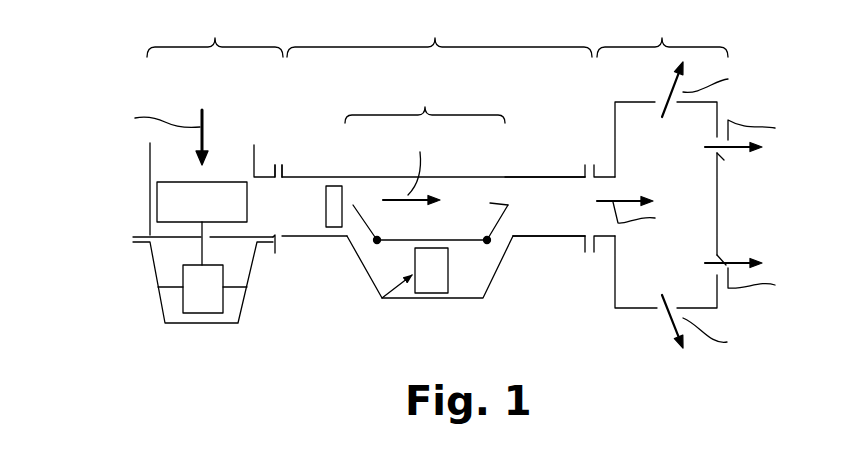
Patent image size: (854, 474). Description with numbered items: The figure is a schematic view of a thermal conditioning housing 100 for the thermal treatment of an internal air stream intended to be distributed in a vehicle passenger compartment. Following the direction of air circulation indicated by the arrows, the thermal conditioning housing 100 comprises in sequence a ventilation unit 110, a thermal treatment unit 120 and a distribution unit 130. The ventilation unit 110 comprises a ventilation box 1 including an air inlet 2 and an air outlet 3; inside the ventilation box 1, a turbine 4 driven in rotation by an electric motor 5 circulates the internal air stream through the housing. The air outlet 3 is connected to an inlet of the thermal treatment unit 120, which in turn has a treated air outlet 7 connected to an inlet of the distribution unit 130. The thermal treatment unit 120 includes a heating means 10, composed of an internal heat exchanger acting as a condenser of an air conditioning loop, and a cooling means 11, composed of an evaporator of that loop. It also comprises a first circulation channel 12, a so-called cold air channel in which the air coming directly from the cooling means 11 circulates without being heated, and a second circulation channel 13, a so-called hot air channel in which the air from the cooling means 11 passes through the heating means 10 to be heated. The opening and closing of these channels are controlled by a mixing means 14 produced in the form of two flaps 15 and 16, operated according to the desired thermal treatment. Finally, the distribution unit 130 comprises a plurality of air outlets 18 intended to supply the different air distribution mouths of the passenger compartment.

The ventilation box 1 is at (265, 167).
The air inlet 2 is at (217, 143).
The air outlet 3 is at (265, 212).
The turbine 4 is at (196, 212).
The electric motor 5 is at (197, 298).
The treated air outlet 7 is at (547, 213).
The heating means 10 is at (382, 298).
The cooling means 11 is at (323, 200).
The first circulation channel 12 is at (482, 228).
The second circulation channel 13 is at (482, 278).
The mixing means 14 is at (425, 143).
The flap 15 is at (366, 218).
The flap 16 is at (490, 203).
The air outlet 18 is at (662, 107).
The thermal conditioning housing 100 is at (147, 277).
The ventilation unit 110 is at (208, 124).
The thermal treatment unit 120 is at (448, 132).
The distribution unit 130 is at (693, 182).